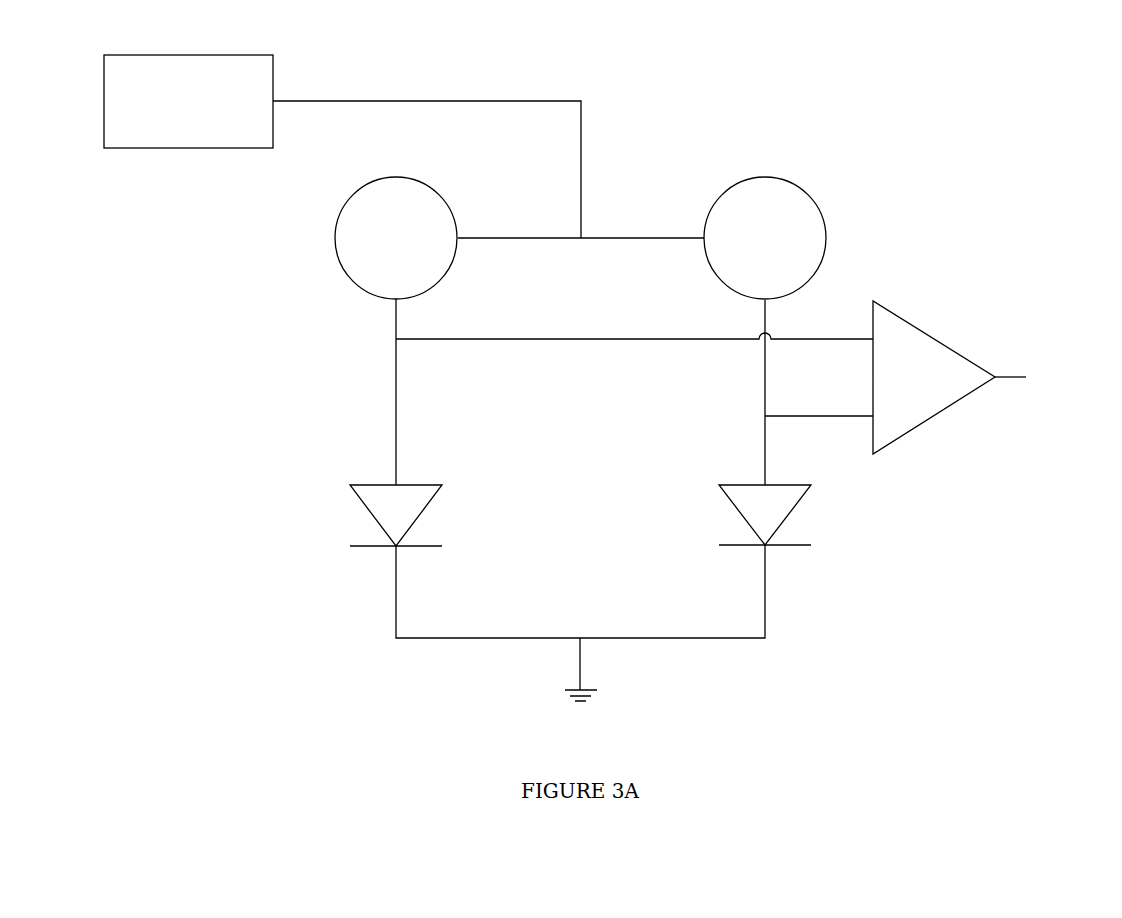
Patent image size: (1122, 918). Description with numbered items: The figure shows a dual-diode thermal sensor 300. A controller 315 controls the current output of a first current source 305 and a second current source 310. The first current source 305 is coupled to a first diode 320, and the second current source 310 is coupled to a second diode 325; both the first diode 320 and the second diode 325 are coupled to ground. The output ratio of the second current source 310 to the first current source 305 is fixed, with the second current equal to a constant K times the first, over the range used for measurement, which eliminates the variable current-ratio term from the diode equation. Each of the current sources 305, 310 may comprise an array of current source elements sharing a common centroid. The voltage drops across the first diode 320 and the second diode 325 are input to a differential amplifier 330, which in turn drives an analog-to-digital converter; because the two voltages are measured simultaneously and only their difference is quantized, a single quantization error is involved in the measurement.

The dual-diode thermal sensor 300 is at (917, 63).
The first current source 305 is at (379, 271).
The second current source 310 is at (748, 291).
The controller 315 is at (172, 121).
The first diode 320 is at (350, 515).
The second diode 325 is at (719, 515).
The differential amplifier 330 is at (886, 386).